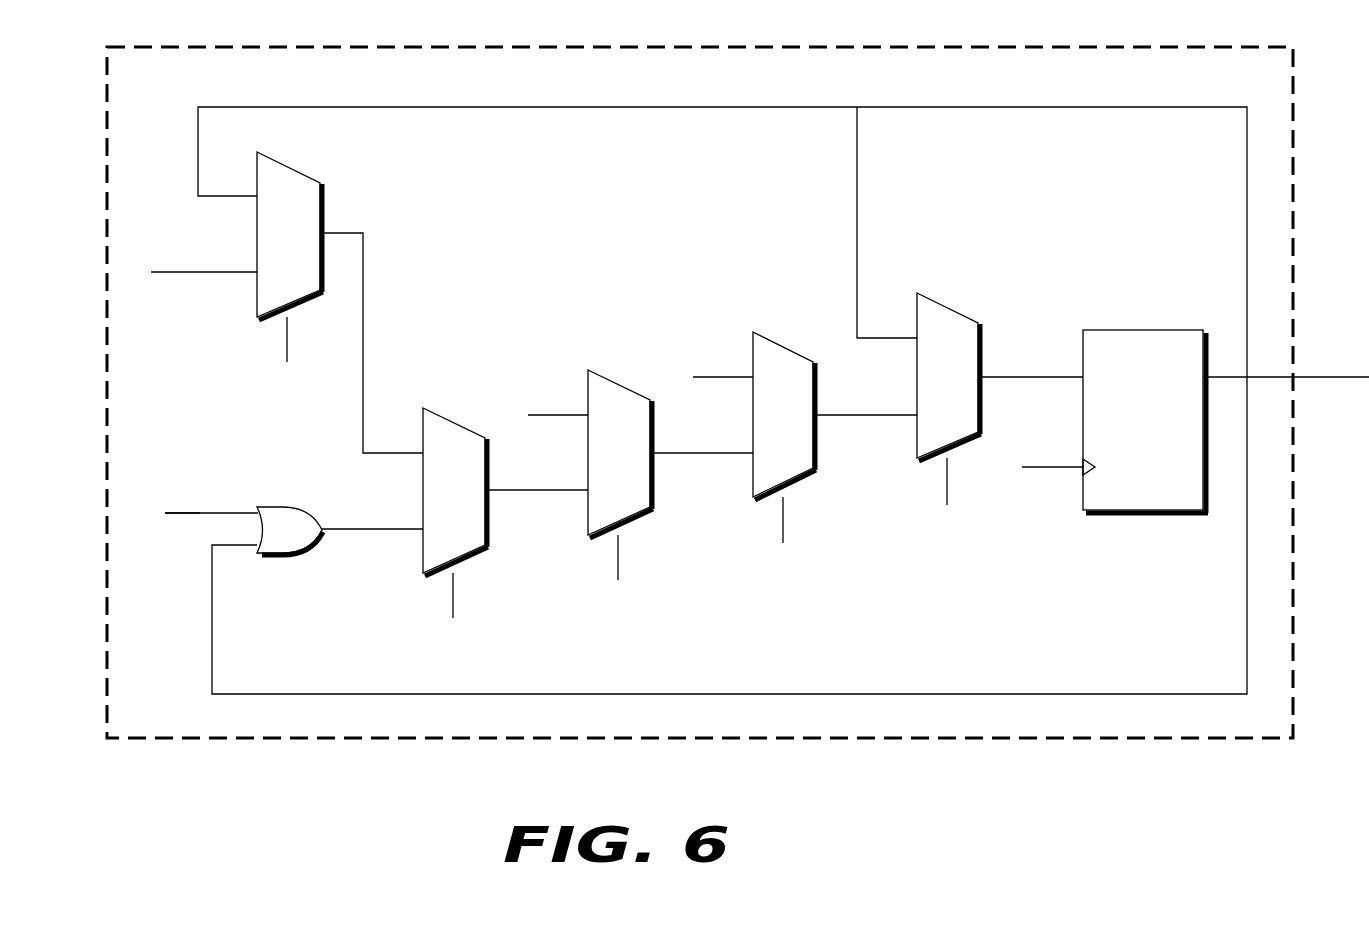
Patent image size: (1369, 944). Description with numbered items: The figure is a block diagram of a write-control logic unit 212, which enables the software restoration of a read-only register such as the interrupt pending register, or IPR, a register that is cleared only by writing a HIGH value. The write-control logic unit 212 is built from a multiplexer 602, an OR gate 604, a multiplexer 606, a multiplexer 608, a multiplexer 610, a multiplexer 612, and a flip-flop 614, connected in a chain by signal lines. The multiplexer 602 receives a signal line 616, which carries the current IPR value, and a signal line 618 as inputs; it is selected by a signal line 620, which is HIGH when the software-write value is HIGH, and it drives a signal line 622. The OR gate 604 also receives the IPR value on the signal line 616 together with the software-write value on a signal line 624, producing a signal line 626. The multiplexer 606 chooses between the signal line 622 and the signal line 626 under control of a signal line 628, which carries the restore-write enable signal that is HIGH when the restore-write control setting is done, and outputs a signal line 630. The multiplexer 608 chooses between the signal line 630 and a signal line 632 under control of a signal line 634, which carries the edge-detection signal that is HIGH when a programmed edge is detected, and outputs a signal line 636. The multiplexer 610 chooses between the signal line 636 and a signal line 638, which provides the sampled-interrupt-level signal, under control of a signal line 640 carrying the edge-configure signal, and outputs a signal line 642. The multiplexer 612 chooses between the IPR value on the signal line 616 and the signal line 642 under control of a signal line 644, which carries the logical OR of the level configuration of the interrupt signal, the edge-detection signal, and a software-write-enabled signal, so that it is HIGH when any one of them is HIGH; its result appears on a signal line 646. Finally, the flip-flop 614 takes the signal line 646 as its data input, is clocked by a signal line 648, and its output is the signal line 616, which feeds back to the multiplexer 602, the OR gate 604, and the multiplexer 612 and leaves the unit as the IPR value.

The write-control logic unit 212 is at (908, 812).
The multiplexer 602 is at (280, 159).
The OR gate 604 is at (278, 503).
The multiplexer 606 is at (465, 418).
The multiplexer 608 is at (628, 385).
The multiplexer 610 is at (793, 347).
The multiplexer 612 is at (955, 308).
The flip-flop 614 is at (1192, 496).
The signal line 616 is at (425, 108).
The signal line 618 is at (188, 273).
The signal line 620 is at (285, 347).
The signal line 622 is at (363, 303).
The signal line 624 is at (200, 510).
The signal line 626 is at (367, 530).
The signal line 628 is at (457, 593).
The signal line 630 is at (543, 493).
The signal line 632 is at (543, 412).
The signal line 634 is at (622, 560).
The signal line 636 is at (707, 455).
The signal line 638 is at (715, 375).
The signal line 640 is at (785, 527).
The signal line 642 is at (875, 415).
The signal line 644 is at (948, 487).
The signal line 646 is at (1032, 373).
The signal line 648 is at (1042, 465).